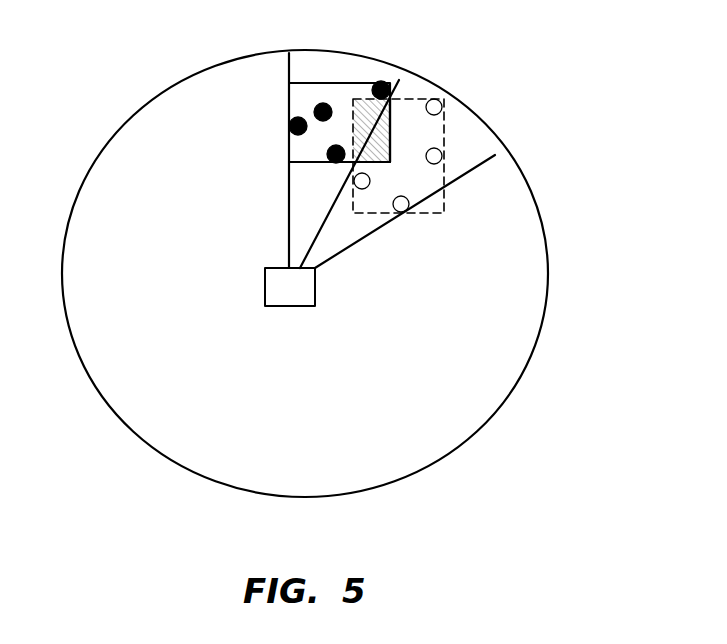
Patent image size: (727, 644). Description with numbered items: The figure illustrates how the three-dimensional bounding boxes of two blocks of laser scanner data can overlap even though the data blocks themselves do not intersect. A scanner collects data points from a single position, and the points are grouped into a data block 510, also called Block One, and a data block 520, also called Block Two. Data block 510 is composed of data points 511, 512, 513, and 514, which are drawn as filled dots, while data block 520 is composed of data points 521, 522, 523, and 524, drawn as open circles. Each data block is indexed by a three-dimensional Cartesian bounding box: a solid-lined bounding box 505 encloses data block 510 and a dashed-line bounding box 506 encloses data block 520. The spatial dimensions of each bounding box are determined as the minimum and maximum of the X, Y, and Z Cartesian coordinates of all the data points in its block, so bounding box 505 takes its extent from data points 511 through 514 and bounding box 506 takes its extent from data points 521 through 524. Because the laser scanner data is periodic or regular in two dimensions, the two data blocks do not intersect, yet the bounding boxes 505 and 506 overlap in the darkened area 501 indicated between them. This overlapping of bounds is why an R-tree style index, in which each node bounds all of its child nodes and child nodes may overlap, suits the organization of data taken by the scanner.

The darkened area 501 is at (397, 155).
The bounding box 505 is at (342, 80).
The bounding box 506 is at (444, 190).
The data block 510 is at (318, 92).
The data point 511 is at (385, 83).
The data point 512 is at (315, 108).
The data point 513 is at (336, 163).
The data point 514 is at (292, 126).
The data block 520 is at (433, 207).
The data point 521 is at (362, 189).
The data point 522 is at (407, 211).
The data point 523 is at (442, 155).
The data point 524 is at (442, 113).
The laser scanner is at (290, 306).